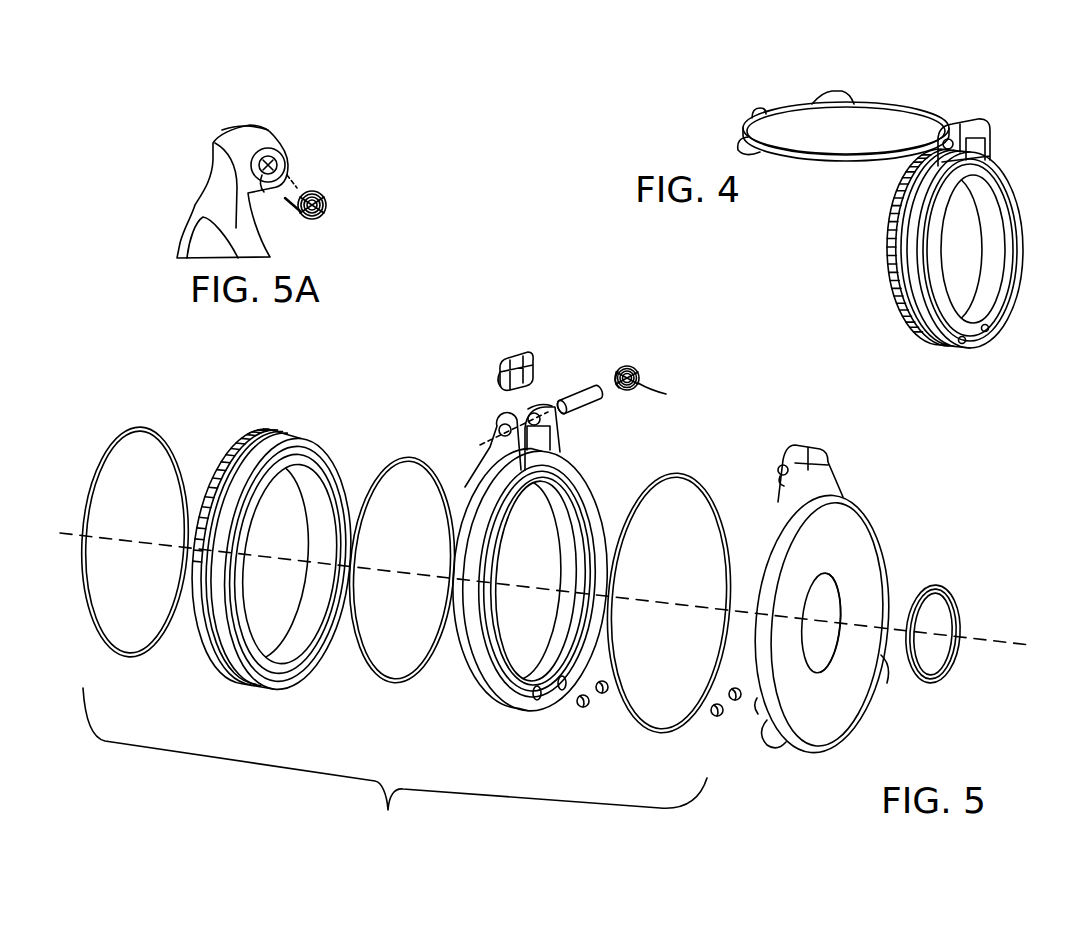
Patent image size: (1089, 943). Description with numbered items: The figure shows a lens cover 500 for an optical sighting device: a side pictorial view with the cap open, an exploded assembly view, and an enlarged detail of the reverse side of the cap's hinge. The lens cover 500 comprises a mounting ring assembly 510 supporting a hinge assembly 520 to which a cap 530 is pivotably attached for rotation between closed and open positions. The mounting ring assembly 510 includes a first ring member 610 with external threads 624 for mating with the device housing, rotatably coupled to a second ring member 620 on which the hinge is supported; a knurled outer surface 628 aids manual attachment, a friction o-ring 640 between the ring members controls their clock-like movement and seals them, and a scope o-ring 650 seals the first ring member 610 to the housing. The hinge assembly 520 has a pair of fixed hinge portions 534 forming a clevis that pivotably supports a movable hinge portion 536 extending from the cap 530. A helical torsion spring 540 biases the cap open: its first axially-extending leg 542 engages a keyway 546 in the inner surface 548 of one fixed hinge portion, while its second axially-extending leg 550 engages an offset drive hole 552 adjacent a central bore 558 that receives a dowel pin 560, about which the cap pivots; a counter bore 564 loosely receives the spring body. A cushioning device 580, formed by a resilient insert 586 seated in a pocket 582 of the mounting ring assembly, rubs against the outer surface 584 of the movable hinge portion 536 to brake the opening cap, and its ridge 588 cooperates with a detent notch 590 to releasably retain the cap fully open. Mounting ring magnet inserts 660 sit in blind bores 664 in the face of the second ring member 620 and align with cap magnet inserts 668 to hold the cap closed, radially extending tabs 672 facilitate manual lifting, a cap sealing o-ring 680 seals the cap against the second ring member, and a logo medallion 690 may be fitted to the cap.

In FIG. 4, the lens cover 500 is at (821, 214).
In FIG. 5, the lens cover 500 is at (952, 511).
In FIG. 4, the mounting ring assembly 510 is at (932, 256).
In FIG. 5, the mounting ring assembly 510 is at (395, 767).
In FIG. 4, the hinge assembly 520 is at (866, 132).
In FIG. 4, the cap 530 is at (811, 111).
In FIG. 5, the cap 530 is at (820, 616).
In FIG. 5A, the cap 530 is at (190, 218).
In FIG. 4, the fixed hinge portions 534 is at (942, 158).
In FIG. 5, the fixed hinge portions 534 is at (527, 407).
In FIG. 4, the movable hinge portion 536 is at (952, 135).
In FIG. 5, the movable hinge portion 536 is at (795, 477).
In FIG. 5A, the movable hinge portion 536 is at (241, 155).
In FIG. 5, the spring 540 is at (667, 349).
In FIG. 5A, the spring 540 is at (327, 166).
In FIG. 5, the first axially-extending leg 542 is at (640, 382).
In FIG. 5A, the first axially-extending leg 542 is at (322, 210).
In FIG. 5, the keyway 546 is at (582, 438).
In FIG. 5, the inner surface 548 is at (538, 405).
In FIG. 5, the second axially-extending leg 550 is at (641, 387).
In FIG. 5, the drive hole 552 is at (790, 480).
In FIG. 5A, the drive hole 552 is at (262, 174).
In FIG. 5, the central bore 558 is at (778, 469).
In FIG. 5A, the central bore 558 is at (263, 157).
In FIG. 5, the dowel pin 560 is at (601, 390).
In FIG. 5A, the counter bore 564 is at (280, 160).
In FIG. 5, the cushioning device 580 is at (485, 338).
In FIG. 5, the pocket 582 is at (540, 421).
In FIG. 5, the outer surface 584 is at (808, 447).
In FIG. 5A, the outer surface 584 is at (227, 127).
In FIG. 5, the insert 586 is at (500, 378).
In FIG. 5, the ridge 588 is at (523, 356).
In FIG. 5A, the detent notch 590 is at (209, 158).
In FIG. 4, the first ring member 610 is at (889, 248).
In FIG. 5, the first ring member 610 is at (271, 557).
In FIG. 4, the second ring member 620 is at (913, 279).
In FIG. 5, the second ring member 620 is at (528, 549).
In FIG. 4, the external threads 624 is at (897, 228).
In FIG. 5, the external threads 624 is at (231, 440).
In FIG. 5, the knurled outer surface 628 is at (237, 690).
In FIG. 5, the friction o-ring 640 is at (375, 682).
In FIG. 5, the scope o-ring 650 is at (141, 427).
In FIG. 4, the mounting ring magnet inserts 660 is at (987, 325).
In FIG. 5, the mounting ring magnet inserts 660 is at (600, 696).
In FIG. 5, the blind bores 664 is at (562, 690).
In FIG. 4, the cap magnet inserts 668 is at (777, 108).
In FIG. 5, the cap magnet inserts 668 is at (735, 702).
In FIG. 4, the tabs 672 is at (744, 137).
In FIG. 5, the tabs 672 is at (775, 744).
In FIG. 5, the cap sealing o-ring 680 is at (668, 734).
In FIG. 5, the logo medallion 690 is at (962, 591).